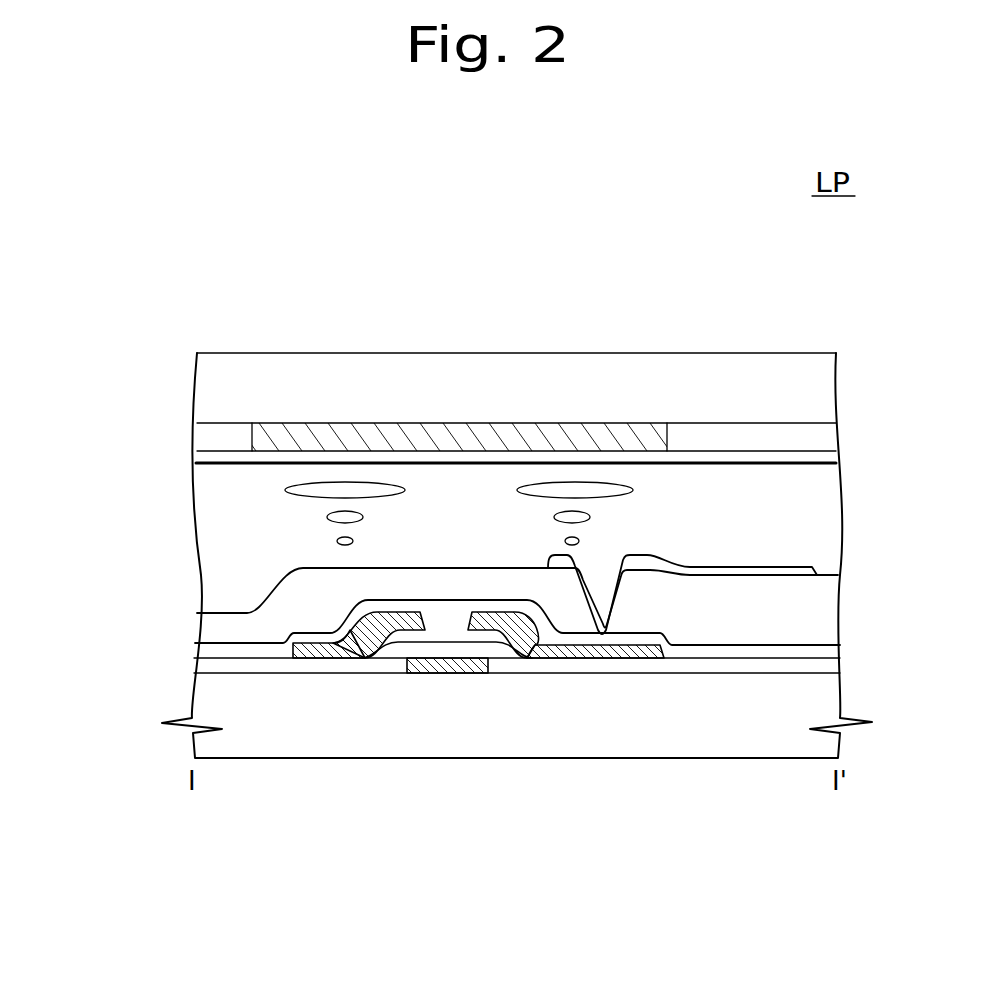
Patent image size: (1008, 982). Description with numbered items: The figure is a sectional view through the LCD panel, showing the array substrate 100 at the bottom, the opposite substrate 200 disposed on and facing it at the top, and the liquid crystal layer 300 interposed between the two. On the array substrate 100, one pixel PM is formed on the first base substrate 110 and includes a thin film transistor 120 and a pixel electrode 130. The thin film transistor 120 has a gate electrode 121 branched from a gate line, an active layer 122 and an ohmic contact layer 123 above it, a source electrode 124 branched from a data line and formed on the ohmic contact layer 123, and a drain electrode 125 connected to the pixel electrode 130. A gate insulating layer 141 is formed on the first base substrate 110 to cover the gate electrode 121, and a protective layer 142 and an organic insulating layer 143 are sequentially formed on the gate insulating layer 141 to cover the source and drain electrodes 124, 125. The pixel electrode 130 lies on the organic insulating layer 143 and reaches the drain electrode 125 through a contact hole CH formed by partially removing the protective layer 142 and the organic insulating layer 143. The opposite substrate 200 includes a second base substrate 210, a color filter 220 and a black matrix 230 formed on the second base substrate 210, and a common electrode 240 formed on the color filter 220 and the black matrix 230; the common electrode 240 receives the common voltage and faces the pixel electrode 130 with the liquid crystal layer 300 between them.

The array substrate 100 is at (88, 590).
The first base substrate 110 is at (203, 697).
The thin film transistor 120 is at (608, 830).
The gate electrode 121 is at (447, 665).
The active layer 122 is at (374, 652).
The ohmic contact layer 123 is at (513, 648).
The source electrode 124 is at (312, 650).
The drain electrode 125 is at (583, 647).
The pixel electrode 130 is at (738, 570).
The gate insulating layer 141 is at (192, 663).
The protective layer 142 is at (197, 651).
The organic insulating layer 143 is at (199, 628).
The opposite substrate 200 is at (747, 282).
The second base substrate 210 is at (425, 385).
The color filter 220 is at (718, 437).
The black matrix 230 is at (523, 432).
The common electrode 240 is at (598, 457).
The liquid crystal layer 300 is at (203, 520).
The contact hole CH is at (611, 567).
The pixel PM is at (800, 883).